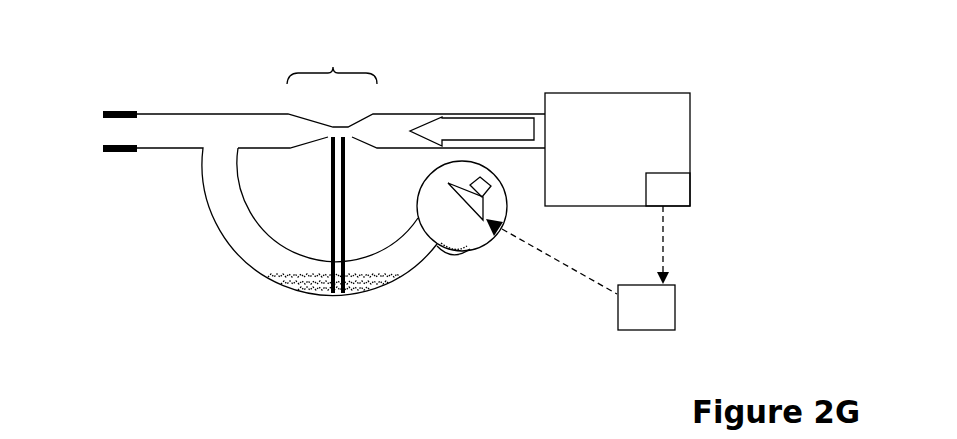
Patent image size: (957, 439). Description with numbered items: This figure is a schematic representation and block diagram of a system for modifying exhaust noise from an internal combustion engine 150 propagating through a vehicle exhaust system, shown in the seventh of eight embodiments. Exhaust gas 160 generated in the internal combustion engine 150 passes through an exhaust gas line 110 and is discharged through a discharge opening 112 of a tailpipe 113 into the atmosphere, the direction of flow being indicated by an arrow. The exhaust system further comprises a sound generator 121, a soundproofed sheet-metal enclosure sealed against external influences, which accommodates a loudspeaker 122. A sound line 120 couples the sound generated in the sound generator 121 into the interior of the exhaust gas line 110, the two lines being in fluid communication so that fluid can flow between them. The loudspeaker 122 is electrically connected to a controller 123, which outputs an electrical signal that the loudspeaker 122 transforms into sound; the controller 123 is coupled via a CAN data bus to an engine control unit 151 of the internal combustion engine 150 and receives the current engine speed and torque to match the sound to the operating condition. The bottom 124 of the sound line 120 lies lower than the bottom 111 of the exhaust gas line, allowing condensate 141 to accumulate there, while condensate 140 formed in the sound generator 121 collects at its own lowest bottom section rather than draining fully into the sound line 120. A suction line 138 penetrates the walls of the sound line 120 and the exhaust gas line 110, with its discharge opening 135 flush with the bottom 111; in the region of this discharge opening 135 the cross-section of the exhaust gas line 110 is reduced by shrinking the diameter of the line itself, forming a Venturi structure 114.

The exhaust gas line 110 is at (245, 112).
The bottom of the exhaust gas line 111 is at (185, 150).
The discharge opening 112 is at (90, 142).
The tailpipe 113 is at (112, 110).
The Venturi structure 114 is at (332, 61).
The sound line 120 is at (252, 208).
The sound generator 121 is at (418, 195).
The loudspeaker 122 is at (504, 195).
The controller 123 is at (633, 330).
The bottom of the sound line 124 is at (327, 297).
The discharge opening of the suction line 135 is at (338, 130).
The suction line 138 is at (378, 222).
The condensate 140 is at (462, 257).
The condensate 141 is at (343, 297).
The internal combustion engine 150 is at (691, 132).
The engine control unit 151 is at (691, 188).
The exhaust gas 160 is at (490, 125).